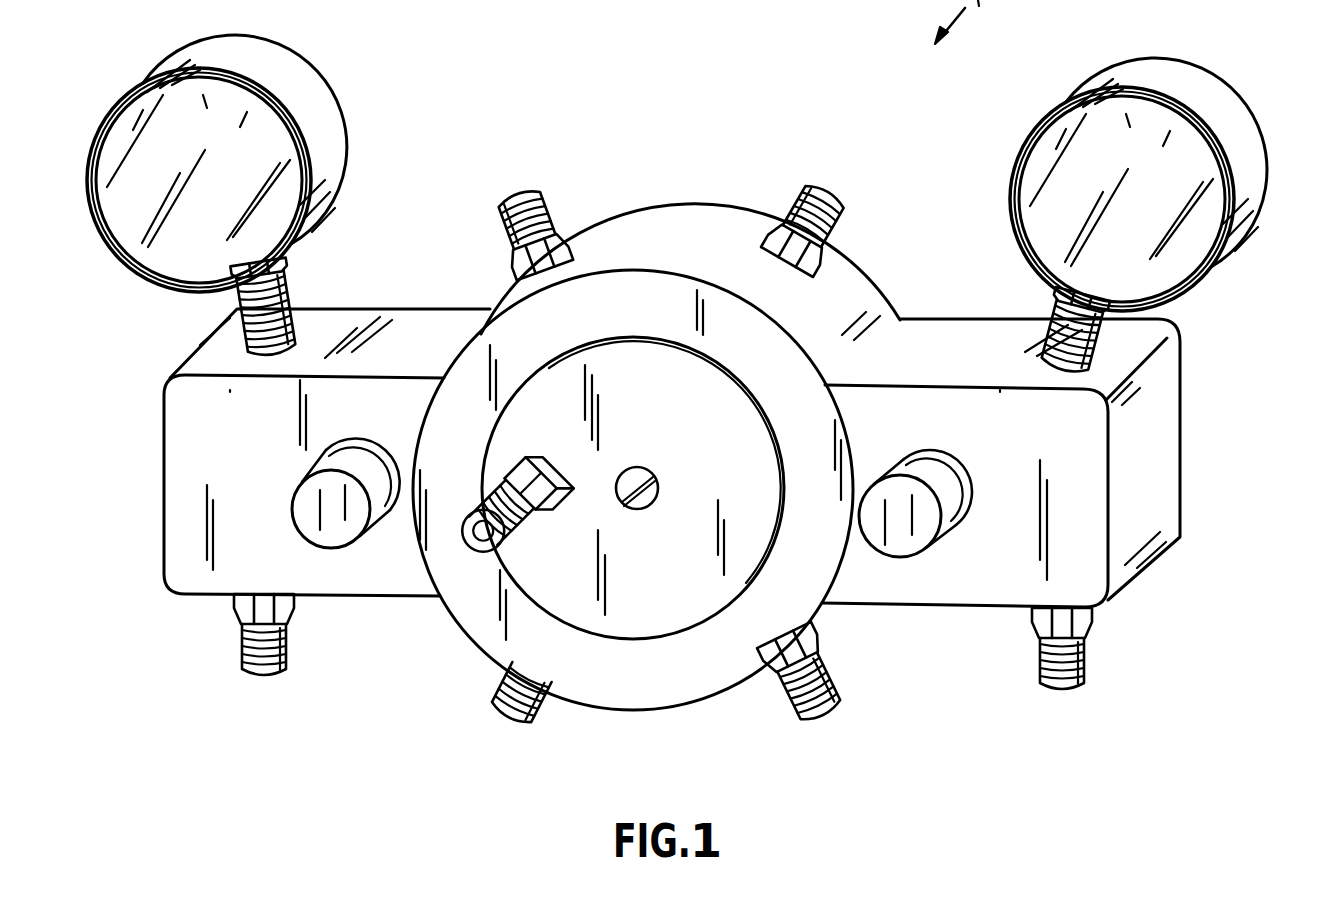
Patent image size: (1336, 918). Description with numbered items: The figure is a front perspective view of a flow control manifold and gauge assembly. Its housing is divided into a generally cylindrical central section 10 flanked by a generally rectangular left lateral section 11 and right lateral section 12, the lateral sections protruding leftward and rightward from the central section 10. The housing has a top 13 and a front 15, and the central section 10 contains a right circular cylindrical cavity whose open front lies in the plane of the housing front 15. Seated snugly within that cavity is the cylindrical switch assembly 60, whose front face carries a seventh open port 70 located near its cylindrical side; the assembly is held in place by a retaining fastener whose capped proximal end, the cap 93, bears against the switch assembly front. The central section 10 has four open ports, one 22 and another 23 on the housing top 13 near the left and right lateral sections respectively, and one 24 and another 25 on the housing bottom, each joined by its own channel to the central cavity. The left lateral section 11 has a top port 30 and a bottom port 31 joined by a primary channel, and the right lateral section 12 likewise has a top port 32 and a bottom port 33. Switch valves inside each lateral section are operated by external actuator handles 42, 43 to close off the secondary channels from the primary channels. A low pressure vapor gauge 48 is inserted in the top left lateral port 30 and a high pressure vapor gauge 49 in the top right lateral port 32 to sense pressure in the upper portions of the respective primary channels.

The central section 10 is at (618, 308).
The left lateral section 11 is at (212, 432).
The right lateral section 12 is at (1009, 435).
The housing top 13 is at (700, 222).
The housing front 15 is at (424, 435).
The open port 22 is at (560, 236).
The open port 23 is at (827, 250).
The open port 24 is at (545, 706).
The open port 25 is at (820, 656).
The top left lateral port 30 is at (307, 342).
The bottom left lateral port 31 is at (292, 603).
The top right lateral port 32 is at (1040, 353).
The bottom right lateral port 33 is at (1092, 622).
The external actuator handle 42 is at (300, 512).
The external actuator handle 43 is at (945, 494).
The low pressure vapor gauge 48 is at (273, 57).
The high pressure vapor gauge 49 is at (1237, 117).
The cylindrical switch assembly 60 is at (620, 396).
The seventh open port 70 is at (538, 508).
The cap 93 is at (648, 477).